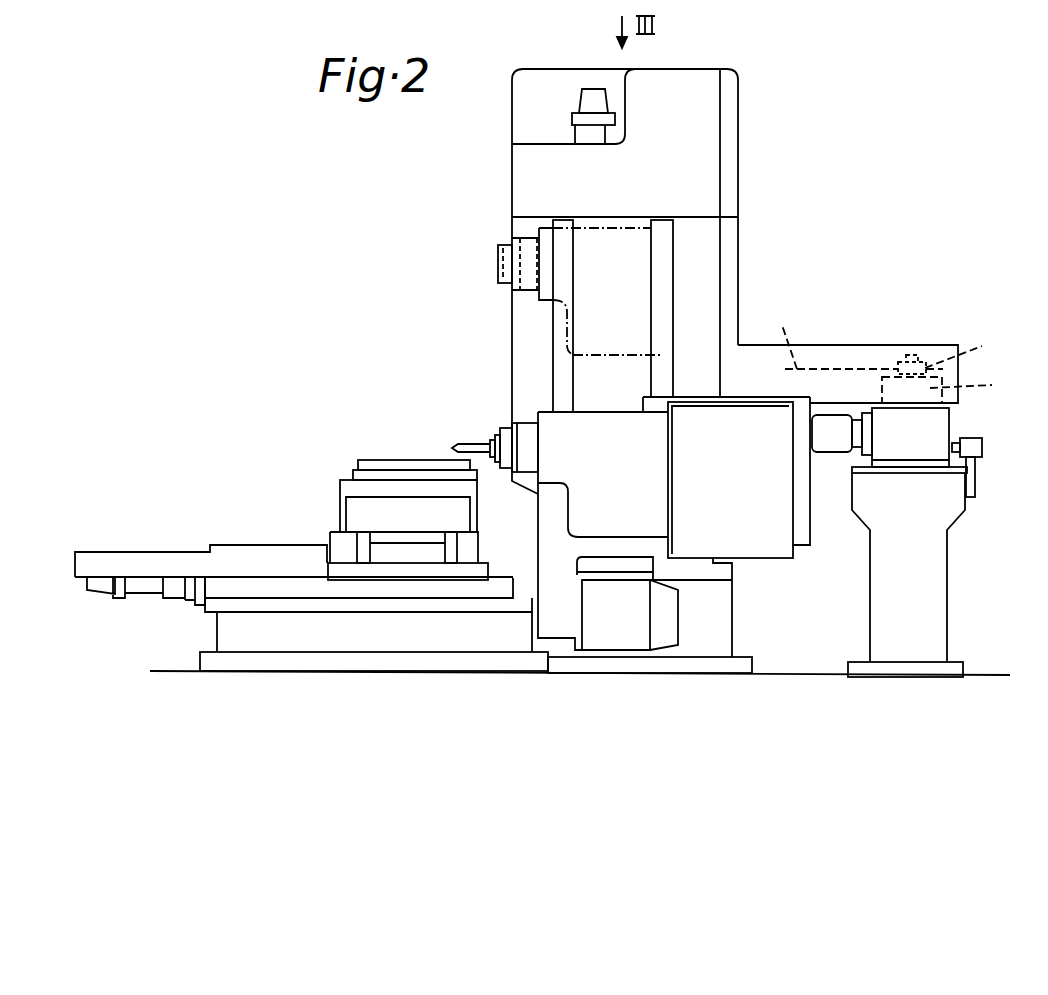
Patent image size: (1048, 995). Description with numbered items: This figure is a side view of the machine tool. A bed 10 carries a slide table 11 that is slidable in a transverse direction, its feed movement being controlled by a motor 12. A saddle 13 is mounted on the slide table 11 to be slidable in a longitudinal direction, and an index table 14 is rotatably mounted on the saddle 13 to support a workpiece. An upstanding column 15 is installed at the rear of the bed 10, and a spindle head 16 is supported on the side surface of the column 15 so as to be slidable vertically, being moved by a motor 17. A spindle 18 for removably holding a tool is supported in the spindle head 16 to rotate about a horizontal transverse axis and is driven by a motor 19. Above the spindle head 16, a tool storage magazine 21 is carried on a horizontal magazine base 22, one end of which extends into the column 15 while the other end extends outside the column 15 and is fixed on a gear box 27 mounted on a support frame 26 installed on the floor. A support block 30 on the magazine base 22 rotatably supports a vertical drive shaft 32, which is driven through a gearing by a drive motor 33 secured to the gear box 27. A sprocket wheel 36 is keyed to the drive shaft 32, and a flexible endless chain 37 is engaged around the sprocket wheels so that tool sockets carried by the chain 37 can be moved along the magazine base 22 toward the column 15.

The bed 10 is at (393, 637).
The slide table 11 is at (350, 553).
The motor 12 is at (145, 590).
The saddle 13 is at (352, 478).
The index table 14 is at (398, 462).
The column 15 is at (705, 246).
The spindle head 16 is at (597, 424).
The motor 17 is at (580, 98).
The spindle 18 is at (498, 436).
The motor 19 is at (635, 613).
The tool storage magazine 21 is at (890, 337).
The magazine base 22 is at (830, 402).
The support frame 26 is at (935, 592).
The gear box 27 is at (937, 423).
The support block 30 is at (951, 387).
The drive shaft 32 is at (897, 334).
The drive motor 33 is at (838, 445).
The sprocket wheel 36 is at (969, 350).
The chain 37 is at (778, 336).